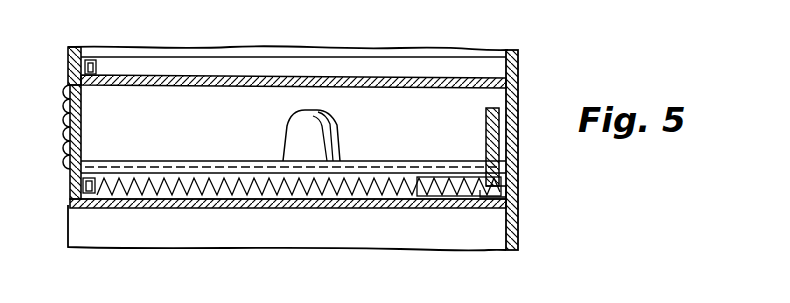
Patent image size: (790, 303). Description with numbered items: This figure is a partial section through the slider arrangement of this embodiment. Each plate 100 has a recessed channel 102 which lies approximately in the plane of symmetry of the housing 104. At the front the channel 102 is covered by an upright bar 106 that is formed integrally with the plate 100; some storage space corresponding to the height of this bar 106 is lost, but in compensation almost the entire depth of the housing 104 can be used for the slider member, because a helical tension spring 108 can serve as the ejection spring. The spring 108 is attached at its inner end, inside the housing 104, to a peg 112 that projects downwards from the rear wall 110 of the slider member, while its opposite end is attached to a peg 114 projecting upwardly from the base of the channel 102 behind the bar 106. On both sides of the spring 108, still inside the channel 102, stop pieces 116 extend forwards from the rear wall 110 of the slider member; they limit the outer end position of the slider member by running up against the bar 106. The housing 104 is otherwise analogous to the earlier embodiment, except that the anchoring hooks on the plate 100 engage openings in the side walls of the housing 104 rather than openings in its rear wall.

The plate 100 is at (427, 66).
The recessed channel 102 is at (328, 76).
The housing 104 is at (522, 230).
The upright bar 106 is at (72, 47).
The helical tension spring 108 is at (203, 201).
The rear wall of the slider member 110 is at (489, 126).
The peg 112 is at (492, 210).
The peg 114 is at (94, 178).
The stop pieces 116 is at (445, 194).